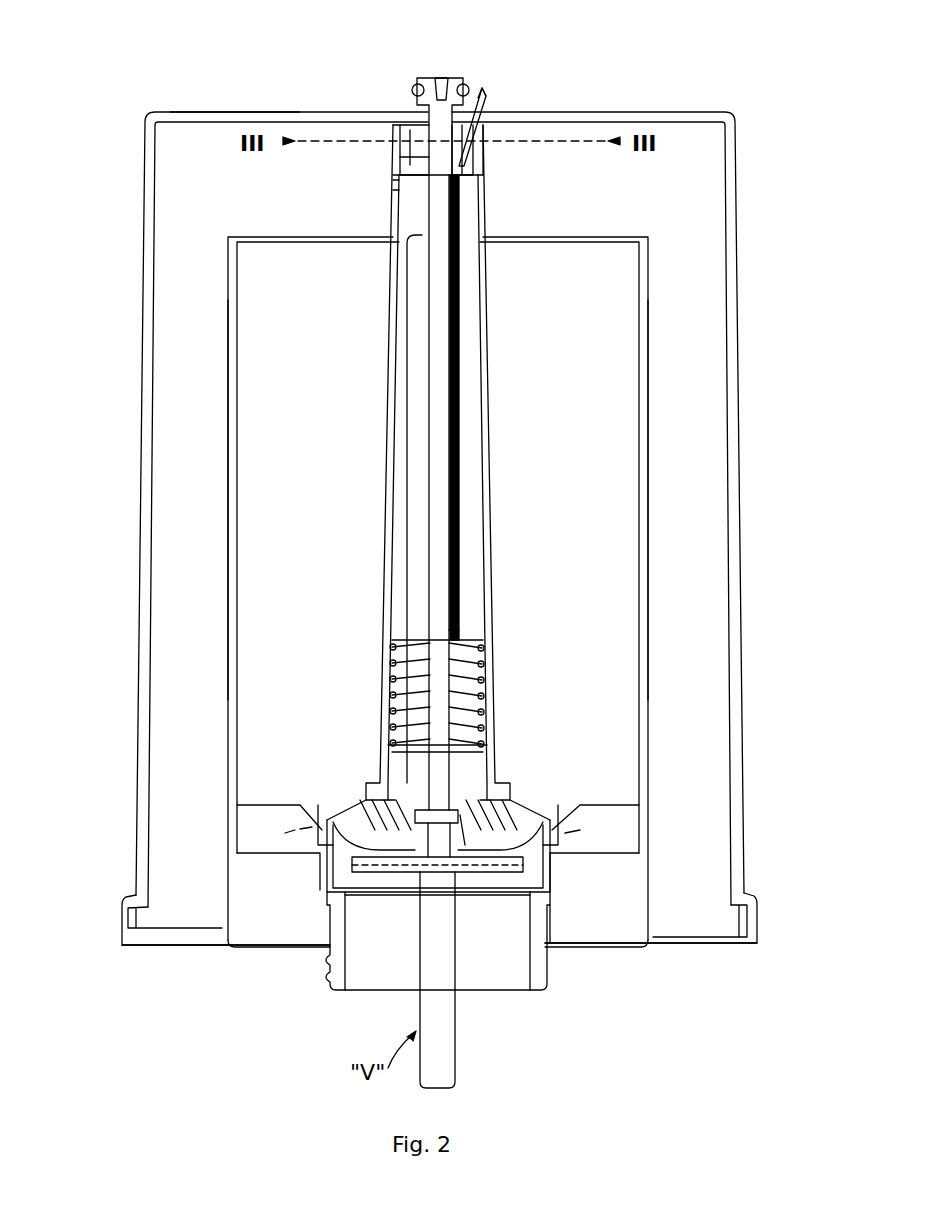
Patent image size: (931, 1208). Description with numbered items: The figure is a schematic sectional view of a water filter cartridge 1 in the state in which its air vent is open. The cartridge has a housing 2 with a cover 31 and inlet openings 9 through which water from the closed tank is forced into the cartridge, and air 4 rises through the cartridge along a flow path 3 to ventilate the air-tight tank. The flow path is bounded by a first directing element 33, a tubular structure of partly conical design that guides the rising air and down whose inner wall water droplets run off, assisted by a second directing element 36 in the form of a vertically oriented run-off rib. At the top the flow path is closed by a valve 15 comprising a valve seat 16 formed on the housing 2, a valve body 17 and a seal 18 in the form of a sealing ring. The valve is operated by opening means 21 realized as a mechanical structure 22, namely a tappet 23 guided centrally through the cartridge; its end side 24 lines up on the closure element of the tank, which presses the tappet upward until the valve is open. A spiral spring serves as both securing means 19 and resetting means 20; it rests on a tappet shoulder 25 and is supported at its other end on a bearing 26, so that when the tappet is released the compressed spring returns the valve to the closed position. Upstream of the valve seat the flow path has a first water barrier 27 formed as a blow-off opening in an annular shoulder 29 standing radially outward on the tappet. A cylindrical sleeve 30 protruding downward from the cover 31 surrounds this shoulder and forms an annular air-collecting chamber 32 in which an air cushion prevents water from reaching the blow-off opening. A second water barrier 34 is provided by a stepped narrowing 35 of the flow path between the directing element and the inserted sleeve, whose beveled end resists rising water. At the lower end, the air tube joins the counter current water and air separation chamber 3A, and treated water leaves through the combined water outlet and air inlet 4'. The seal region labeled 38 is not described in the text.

The water filter cartridge 1 is at (147, 104).
The cover 31 is at (205, 108).
The housing 2 is at (150, 188).
The inlet openings 9 is at (130, 955).
The first directing element 33 is at (385, 300).
The mechanical structure 22 is at (395, 516).
The flow path for air 3 is at (479, 82).
The tappet 23 is at (448, 355).
The second directing element 36 is at (460, 505).
The valve 15 is at (423, 76).
The valve body 17 is at (420, 78).
The seal 18 is at (412, 92).
The valve seat 16 is at (405, 122).
The first water barrier 27 is at (494, 90).
The annular shoulder 29 is at (405, 158).
The cylindrical sleeve 30 is at (410, 165).
The air-collecting chamber 32 is at (470, 155).
The air 4 is at (495, 161).
The second water barrier 34 is at (398, 187).
The narrowing 35 is at (396, 198).
The securing means 19 is at (508, 645).
The resetting means 20 is at (488, 640).
The bearing 26 is at (466, 631).
The tappet shoulder 25 is at (485, 742).
The opening means 21 is at (408, 838).
The end side of the tappet 24 is at (455, 830).
The seal 38 is at (360, 800).
The counter current water and air separation chamber 3A is at (495, 842).
The combined water outlet and air inlet 4' is at (367, 987).